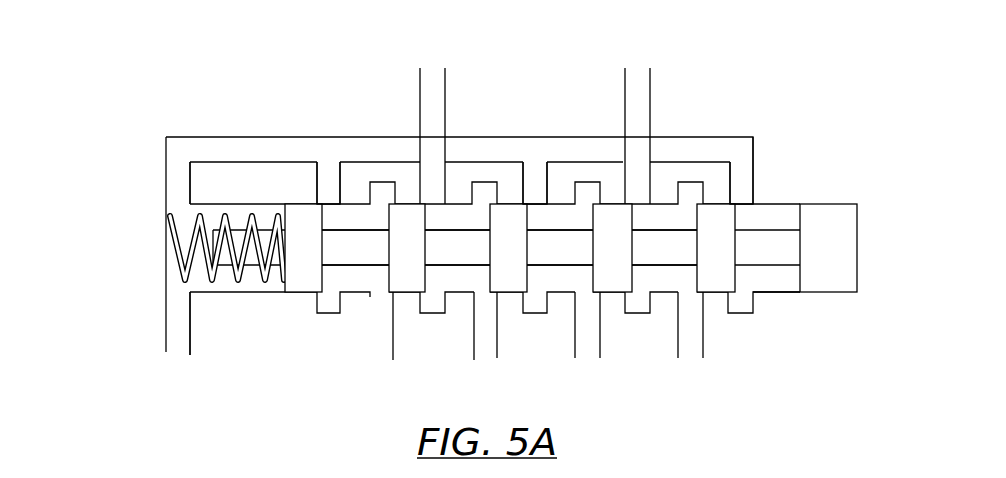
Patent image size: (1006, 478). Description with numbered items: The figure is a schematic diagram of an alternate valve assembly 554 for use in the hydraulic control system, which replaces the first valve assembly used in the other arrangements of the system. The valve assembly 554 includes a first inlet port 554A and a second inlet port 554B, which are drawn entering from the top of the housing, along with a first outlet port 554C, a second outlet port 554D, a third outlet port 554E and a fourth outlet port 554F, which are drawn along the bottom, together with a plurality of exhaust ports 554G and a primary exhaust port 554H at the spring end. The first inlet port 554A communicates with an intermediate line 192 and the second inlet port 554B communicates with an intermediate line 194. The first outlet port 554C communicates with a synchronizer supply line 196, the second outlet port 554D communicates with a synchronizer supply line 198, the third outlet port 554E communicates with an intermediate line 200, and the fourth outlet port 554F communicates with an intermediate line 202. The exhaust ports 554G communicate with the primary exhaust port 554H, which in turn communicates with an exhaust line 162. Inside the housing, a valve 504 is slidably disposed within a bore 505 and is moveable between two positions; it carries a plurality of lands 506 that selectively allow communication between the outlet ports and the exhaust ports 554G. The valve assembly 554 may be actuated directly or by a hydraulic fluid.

The valve assembly 554 is at (871, 113).
The exhaust line 162 is at (167, 349).
The intermediate line 192 is at (445, 80).
The intermediate line 194 is at (650, 80).
The synchronizer supply line 196 is at (393, 346).
The synchronizer supply line 198 is at (601, 346).
The intermediate line 200 is at (497, 346).
The intermediate line 202 is at (703, 346).
The valve 504 is at (842, 247).
The bore 505 is at (788, 293).
The lands 506 is at (303, 277).
The first inlet port 554A is at (432, 204).
The second inlet port 554B is at (639, 203).
The first outlet port 554C is at (370, 310).
The second outlet port 554D is at (483, 293).
The third outlet port 554E is at (587, 295).
The fourth outlet port 554F is at (687, 295).
The exhaust ports 554G is at (333, 203).
The primary exhaust port 554H is at (180, 295).